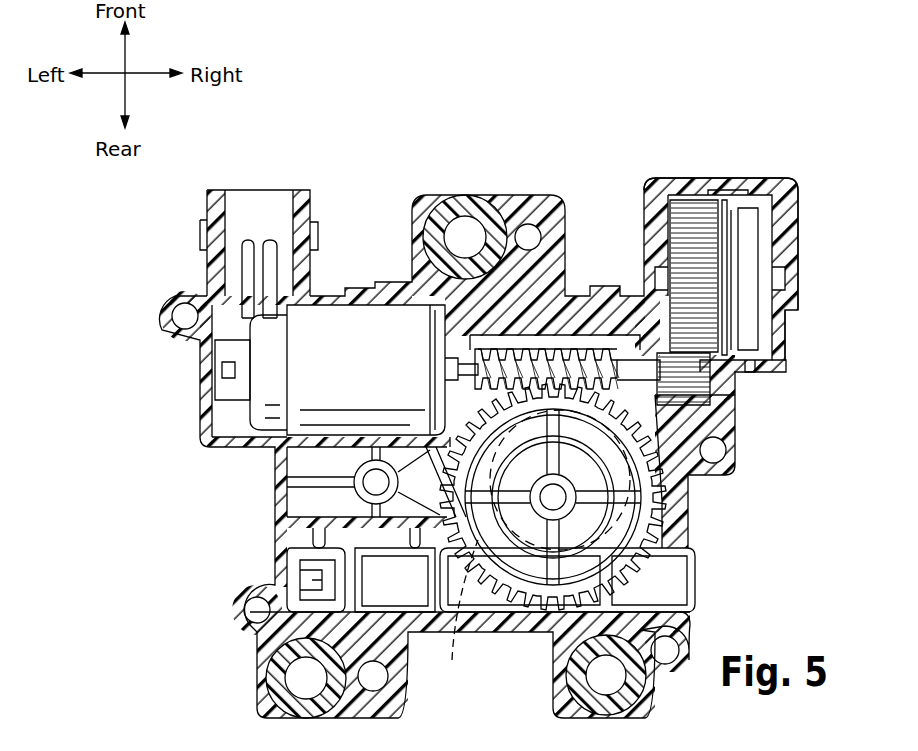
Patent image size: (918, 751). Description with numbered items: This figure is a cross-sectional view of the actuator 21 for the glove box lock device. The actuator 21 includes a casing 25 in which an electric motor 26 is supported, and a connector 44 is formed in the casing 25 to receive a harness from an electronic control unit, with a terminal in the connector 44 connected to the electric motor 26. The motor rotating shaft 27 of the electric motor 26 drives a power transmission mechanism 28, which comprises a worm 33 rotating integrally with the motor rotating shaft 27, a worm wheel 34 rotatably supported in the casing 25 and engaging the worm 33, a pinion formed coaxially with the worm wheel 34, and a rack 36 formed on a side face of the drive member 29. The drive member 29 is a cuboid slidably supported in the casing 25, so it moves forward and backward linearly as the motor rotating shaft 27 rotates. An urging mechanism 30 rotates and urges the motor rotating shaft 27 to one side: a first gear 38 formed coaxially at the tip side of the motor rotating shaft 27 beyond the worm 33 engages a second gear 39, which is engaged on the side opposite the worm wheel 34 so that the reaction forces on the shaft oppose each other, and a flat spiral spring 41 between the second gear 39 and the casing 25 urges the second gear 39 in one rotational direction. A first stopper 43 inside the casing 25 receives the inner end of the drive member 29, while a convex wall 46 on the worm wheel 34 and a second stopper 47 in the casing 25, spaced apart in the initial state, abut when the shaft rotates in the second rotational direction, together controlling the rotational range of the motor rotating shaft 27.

The actuator 21 is at (366, 102).
The casing 25 is at (788, 180).
The electric motor 26 is at (335, 322).
The motor rotating shaft 27 is at (448, 375).
The power transmission mechanism 28 is at (568, 345).
The drive member 29 is at (695, 582).
The urging mechanism 30 is at (795, 355).
The worm 33 is at (619, 340).
The worm wheel 34 is at (675, 520).
The rack 36 is at (512, 592).
The first gear 38 is at (702, 398).
The second gear 39 is at (691, 220).
The flat spiral spring 41 is at (750, 254).
The first stopper 43 is at (330, 572).
The connector 44 is at (262, 203).
The convex wall 46 is at (683, 484).
The second stopper 47 is at (454, 617).